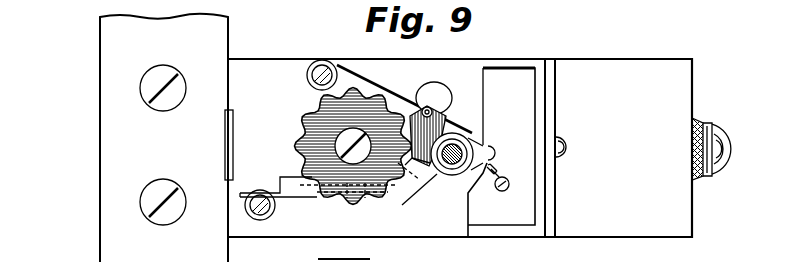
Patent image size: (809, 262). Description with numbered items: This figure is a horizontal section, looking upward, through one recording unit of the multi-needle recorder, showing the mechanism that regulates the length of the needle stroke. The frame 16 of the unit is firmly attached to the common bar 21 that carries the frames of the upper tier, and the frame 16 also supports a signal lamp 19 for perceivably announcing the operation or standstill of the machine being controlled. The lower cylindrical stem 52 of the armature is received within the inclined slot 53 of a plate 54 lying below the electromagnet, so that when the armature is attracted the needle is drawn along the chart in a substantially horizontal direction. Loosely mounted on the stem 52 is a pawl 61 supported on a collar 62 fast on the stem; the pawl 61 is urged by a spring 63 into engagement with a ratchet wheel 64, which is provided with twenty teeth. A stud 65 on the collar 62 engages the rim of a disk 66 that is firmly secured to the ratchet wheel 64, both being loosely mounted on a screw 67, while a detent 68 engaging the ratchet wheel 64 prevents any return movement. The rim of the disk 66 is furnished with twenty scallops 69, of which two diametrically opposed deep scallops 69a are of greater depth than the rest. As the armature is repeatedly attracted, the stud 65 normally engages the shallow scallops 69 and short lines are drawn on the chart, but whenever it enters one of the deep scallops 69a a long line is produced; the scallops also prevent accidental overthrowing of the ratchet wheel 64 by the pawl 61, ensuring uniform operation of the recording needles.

The common bar 21 is at (166, 138).
The frame 16 is at (517, 60).
The signal lamp 19 is at (722, 134).
The stem 52 is at (463, 148).
The inclined slot 53 is at (467, 122).
The plate 54 is at (450, 177).
The pawl 61 is at (426, 107).
The collar 62 is at (495, 176).
The spring 63 is at (447, 122).
The ratchet wheel 64 is at (310, 112).
The stud 65 is at (408, 154).
The disk 66 is at (323, 155).
The screw 67 is at (358, 158).
The detent 68 is at (308, 197).
The scallops 69 is at (375, 97).
The deep scallops 69a is at (307, 133).